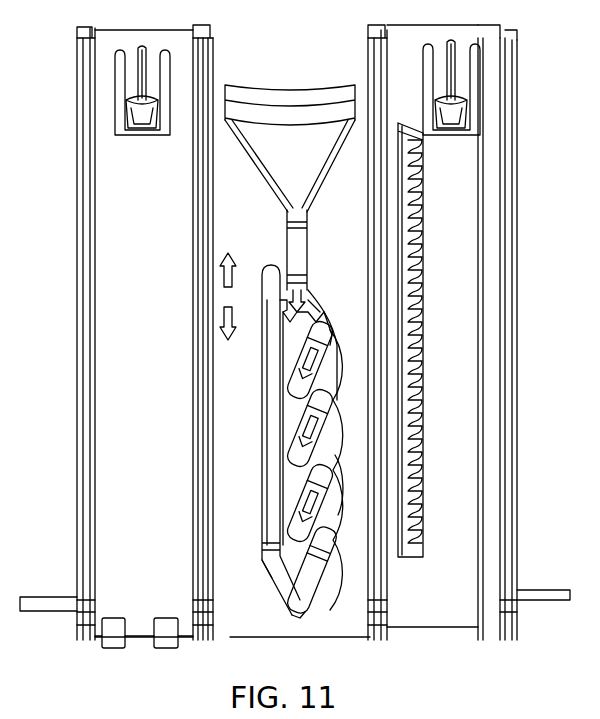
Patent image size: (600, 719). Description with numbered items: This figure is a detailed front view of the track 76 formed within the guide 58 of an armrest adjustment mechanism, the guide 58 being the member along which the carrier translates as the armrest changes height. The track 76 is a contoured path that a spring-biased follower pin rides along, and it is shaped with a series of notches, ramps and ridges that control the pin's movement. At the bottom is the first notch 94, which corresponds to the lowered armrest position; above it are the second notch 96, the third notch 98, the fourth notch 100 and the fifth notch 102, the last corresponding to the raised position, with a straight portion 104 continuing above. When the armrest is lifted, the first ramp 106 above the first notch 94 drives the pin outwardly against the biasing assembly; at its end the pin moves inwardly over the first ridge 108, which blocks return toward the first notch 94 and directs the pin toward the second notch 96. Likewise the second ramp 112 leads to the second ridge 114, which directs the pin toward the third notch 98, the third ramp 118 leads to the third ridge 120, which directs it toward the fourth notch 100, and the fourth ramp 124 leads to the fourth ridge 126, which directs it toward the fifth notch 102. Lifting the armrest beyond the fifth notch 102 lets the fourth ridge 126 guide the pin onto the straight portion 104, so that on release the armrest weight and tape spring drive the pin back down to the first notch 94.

The guide 58 is at (108, 477).
The track 76 is at (355, 358).
The first notch 94 is at (302, 620).
The second notch 96 is at (290, 612).
The third notch 98 is at (305, 468).
The fourth notch 100 is at (310, 392).
The fifth notch 102 is at (296, 334).
The straight portion 104 is at (265, 368).
The first ramp 106 is at (323, 557).
The first ridge 108 is at (327, 560).
The second ramp 112 is at (330, 485).
The second ridge 114 is at (330, 462).
The third ramp 118 is at (330, 425).
The third ridge 120 is at (330, 398).
The fourth ramp 124 is at (325, 318).
The fourth ridge 126 is at (300, 297).